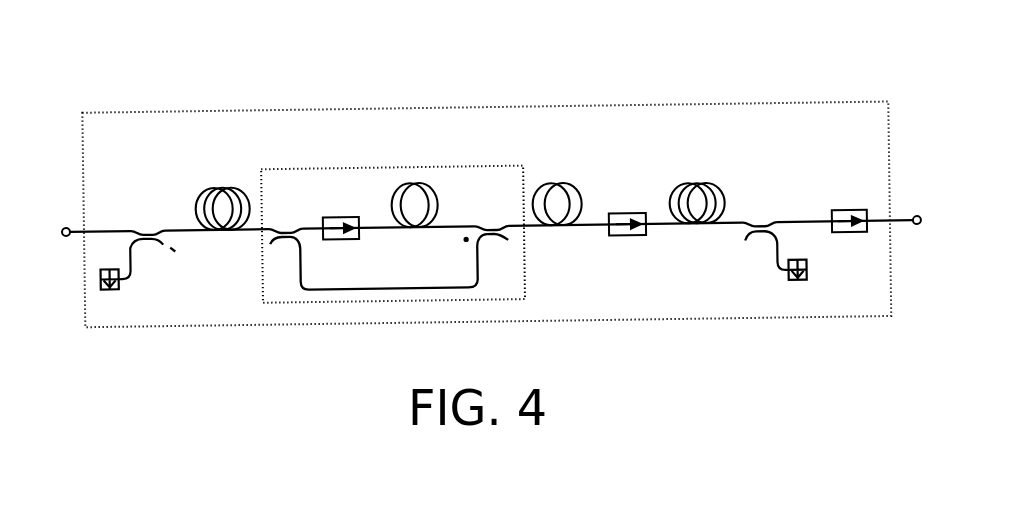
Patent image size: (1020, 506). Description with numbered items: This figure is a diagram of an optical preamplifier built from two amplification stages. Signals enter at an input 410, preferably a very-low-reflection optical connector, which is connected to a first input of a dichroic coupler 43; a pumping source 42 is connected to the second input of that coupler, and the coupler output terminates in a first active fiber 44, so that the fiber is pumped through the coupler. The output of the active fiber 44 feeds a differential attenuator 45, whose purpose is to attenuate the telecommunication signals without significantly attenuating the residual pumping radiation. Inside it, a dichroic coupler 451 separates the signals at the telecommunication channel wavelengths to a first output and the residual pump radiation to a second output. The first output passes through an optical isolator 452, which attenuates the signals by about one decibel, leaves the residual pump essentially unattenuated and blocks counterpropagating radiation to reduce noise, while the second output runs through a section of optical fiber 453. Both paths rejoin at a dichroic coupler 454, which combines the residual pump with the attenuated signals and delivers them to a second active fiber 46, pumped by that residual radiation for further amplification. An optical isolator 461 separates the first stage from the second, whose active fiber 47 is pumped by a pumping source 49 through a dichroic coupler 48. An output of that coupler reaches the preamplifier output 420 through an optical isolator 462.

The input 410 is at (65, 222).
The output 420 is at (915, 217).
The pumping source 42 is at (106, 296).
The dichroic coupler 43 is at (146, 226).
The first active fiber 44 is at (225, 187).
The differential attenuator 45 is at (457, 167).
The dichroic coupler 451 is at (283, 221).
The optical isolator 452 is at (343, 221).
The optical fiber coil 453 is at (417, 238).
The dichroic coupler 454 is at (493, 253).
The second active fiber 46 is at (553, 187).
The optical isolator 461 is at (630, 218).
The active fiber 47 is at (697, 189).
The dichroic coupler 48 is at (762, 227).
The pumping source 49 is at (798, 293).
The optical isolator 462 is at (852, 216).